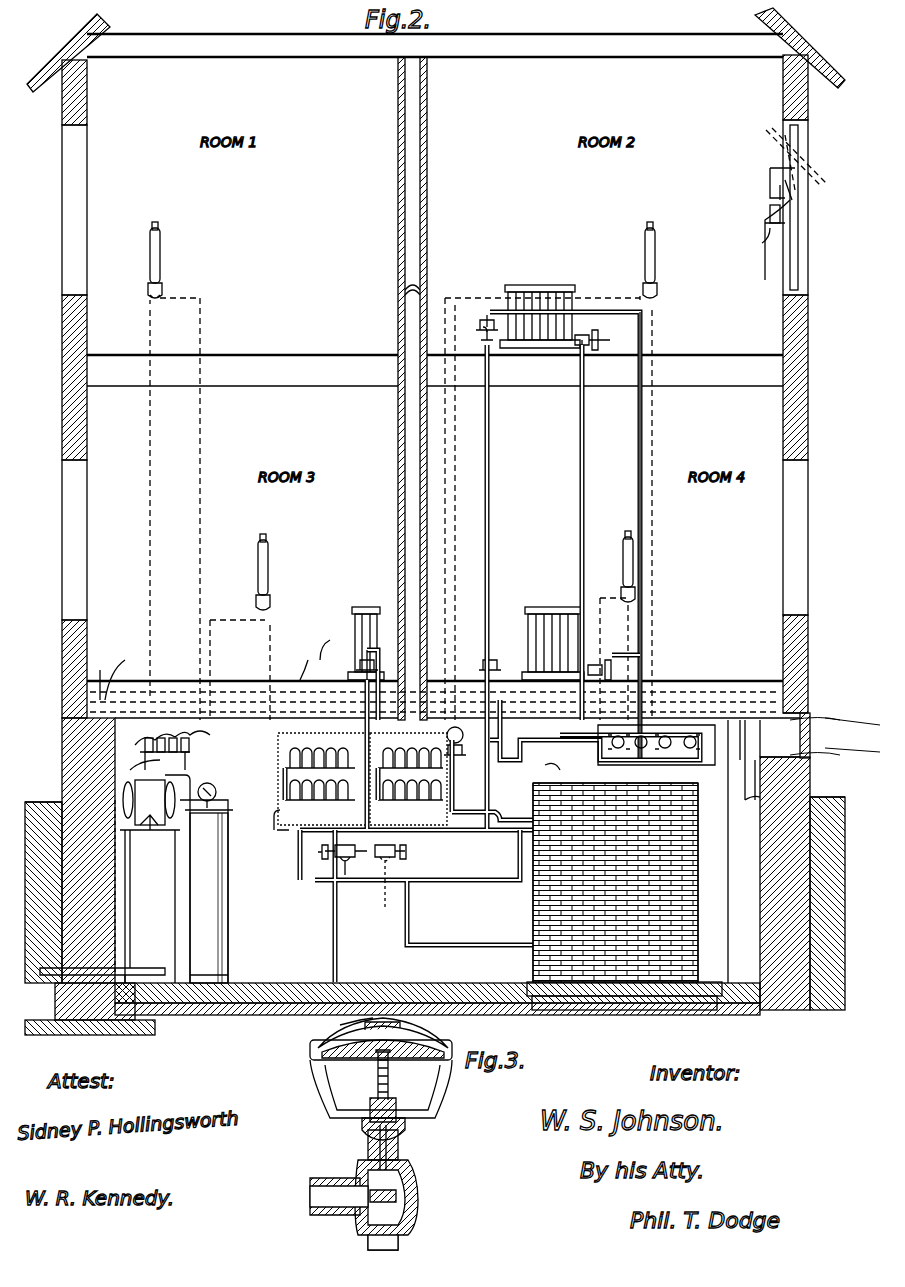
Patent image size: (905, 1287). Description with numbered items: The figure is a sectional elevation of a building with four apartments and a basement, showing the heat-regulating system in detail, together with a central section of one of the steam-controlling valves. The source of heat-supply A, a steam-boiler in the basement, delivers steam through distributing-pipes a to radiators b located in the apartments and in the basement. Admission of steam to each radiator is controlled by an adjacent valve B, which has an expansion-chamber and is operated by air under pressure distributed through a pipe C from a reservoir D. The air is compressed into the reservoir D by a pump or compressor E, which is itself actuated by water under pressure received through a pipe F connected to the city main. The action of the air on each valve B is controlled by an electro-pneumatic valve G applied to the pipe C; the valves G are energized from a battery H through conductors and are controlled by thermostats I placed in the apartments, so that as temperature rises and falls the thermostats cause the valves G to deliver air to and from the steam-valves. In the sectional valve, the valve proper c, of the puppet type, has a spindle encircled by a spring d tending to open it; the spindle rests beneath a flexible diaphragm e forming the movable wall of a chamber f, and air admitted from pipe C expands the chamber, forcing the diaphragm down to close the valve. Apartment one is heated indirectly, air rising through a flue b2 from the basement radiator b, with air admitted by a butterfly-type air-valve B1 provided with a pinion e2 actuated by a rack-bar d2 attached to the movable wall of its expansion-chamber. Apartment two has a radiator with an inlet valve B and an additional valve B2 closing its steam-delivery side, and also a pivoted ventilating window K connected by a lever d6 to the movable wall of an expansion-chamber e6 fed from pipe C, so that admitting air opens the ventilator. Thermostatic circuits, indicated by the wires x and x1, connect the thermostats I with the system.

In FIG. 2, the thermostat I is at (168, 275).
In FIG. 2, the circuit wire x is at (413, 503).
In FIG. 2, the circuit wire branch x1 is at (386, 444).
In FIG. 2, the pivoted ventilating valve or window K is at (798, 150).
In FIG. 2, the lever d6 is at (768, 184).
In FIG. 2, the expansion-chamber e6 is at (767, 221).
In FIG. 2, the radiator b is at (330, 787).
In FIG. 2, the flue b2 is at (412, 388).
In FIG. 2, the pipe C is at (627, 766).
In FIG. 3, the pipe C is at (345, 1022).
In FIG. 2, the valve B is at (362, 898).
In FIG. 3, the valve B is at (415, 1170).
In FIG. 2, the additional valve B2 is at (593, 498).
In FIG. 2, the air-valve B1 is at (325, 863).
In FIG. 2, the distributing-pipe a is at (492, 375).
In FIG. 2, the spring d is at (346, 844).
In FIG. 3, the spring d is at (390, 1082).
In FIG. 2, the flexible diaphragm e is at (353, 862).
In FIG. 3, the flexible diaphragm e is at (340, 1035).
In FIG. 2, the rack-bar d2 is at (390, 843).
In FIG. 2, the pinion e2 is at (385, 880).
In FIG. 3, the chamber f is at (415, 1035).
In FIG. 3, the valve proper c is at (370, 1196).
In FIG. 2, the electro-pneumatic valve G is at (704, 765).
In FIG. 2, the source of heat-supply A is at (615, 858).
In FIG. 2, the pump or compressor E is at (150, 881).
In FIG. 2, the battery or other generator H is at (172, 750).
In FIG. 2, the reservoir D is at (192, 880).
In FIG. 2, the pipe F is at (45, 968).